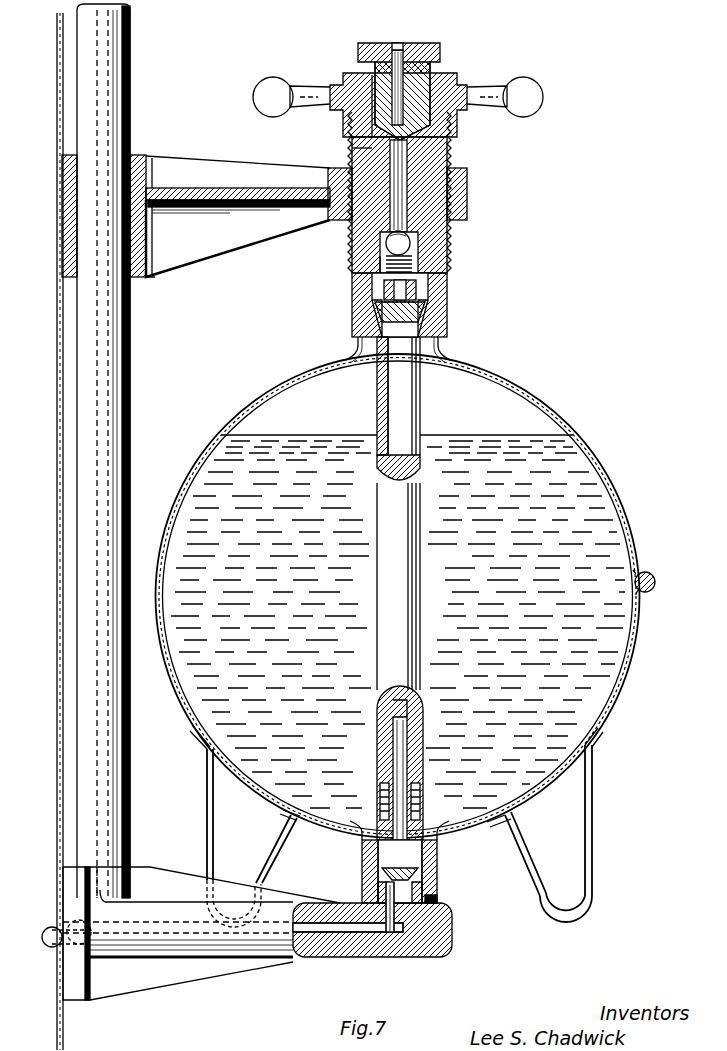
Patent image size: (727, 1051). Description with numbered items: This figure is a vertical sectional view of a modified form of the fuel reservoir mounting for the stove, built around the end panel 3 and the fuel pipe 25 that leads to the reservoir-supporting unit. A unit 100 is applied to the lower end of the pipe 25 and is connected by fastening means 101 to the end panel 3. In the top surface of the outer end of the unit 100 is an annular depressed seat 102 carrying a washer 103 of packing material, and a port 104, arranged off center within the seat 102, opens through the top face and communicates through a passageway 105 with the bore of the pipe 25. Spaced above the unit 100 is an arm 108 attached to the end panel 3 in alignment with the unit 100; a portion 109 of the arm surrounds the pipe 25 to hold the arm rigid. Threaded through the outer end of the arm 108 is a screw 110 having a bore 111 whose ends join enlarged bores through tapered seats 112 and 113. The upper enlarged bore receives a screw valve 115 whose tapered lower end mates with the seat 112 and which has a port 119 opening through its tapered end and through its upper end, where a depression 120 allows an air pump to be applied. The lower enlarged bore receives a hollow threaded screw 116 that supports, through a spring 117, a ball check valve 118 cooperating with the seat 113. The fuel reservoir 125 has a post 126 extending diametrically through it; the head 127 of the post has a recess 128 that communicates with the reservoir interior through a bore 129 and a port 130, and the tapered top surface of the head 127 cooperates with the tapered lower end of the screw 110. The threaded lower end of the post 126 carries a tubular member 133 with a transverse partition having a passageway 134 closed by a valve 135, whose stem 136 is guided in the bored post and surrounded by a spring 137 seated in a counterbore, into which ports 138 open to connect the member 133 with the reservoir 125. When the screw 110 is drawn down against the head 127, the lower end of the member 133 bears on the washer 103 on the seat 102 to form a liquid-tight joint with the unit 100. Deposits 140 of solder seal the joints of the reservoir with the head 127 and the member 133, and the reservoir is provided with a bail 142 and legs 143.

The end panel 3 is at (52, 512).
The fuel pipe 25 is at (118, 474).
The unit 100 is at (190, 905).
The fastening means 101 is at (105, 958).
The annular depressed seat 102 is at (448, 933).
The washer 103 is at (437, 900).
The port 104 is at (390, 934).
The passageway 105 is at (338, 932).
The arm 108 is at (200, 250).
The portion 109 is at (140, 282).
The screw 110 is at (447, 148).
The bore 111 is at (440, 234).
The tapered seat 112 is at (352, 147).
The tapered seat 113 is at (372, 242).
The screw valve 115 is at (441, 49).
The hollow threaded screw 116 is at (416, 296).
The spring 117 is at (420, 264).
The ball check valve 118 is at (380, 262).
The port 119 is at (432, 70).
The depression 120 is at (396, 45).
The fuel reservoir 125 is at (604, 478).
The post 126 is at (412, 526).
The head 127 is at (447, 327).
The recess 128 is at (352, 316).
The bore 129 is at (377, 401).
The port 130 is at (380, 446).
The tubular member 133 is at (437, 851).
The passageway 134 is at (378, 886).
The valve 135 is at (418, 870).
The stem 136 is at (378, 736).
The spring 137 is at (416, 795).
The ports 138 is at (368, 818).
The deposits 140 is at (452, 352).
The bail 142 is at (655, 582).
The legs 143 is at (207, 840).